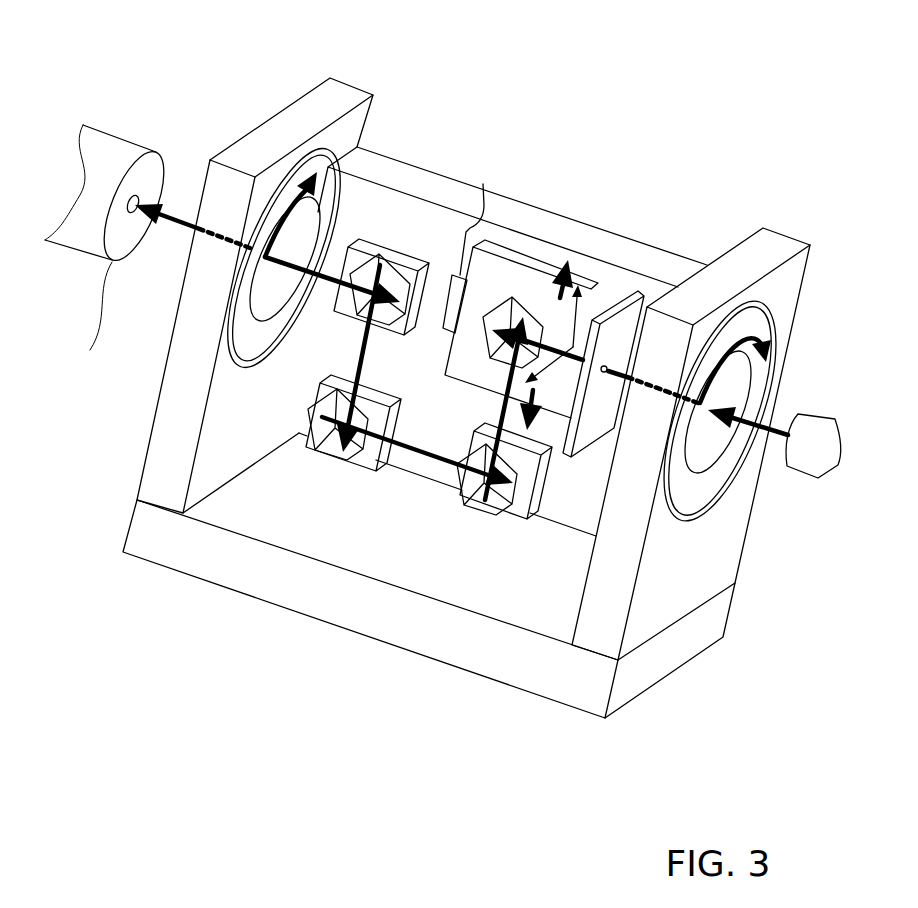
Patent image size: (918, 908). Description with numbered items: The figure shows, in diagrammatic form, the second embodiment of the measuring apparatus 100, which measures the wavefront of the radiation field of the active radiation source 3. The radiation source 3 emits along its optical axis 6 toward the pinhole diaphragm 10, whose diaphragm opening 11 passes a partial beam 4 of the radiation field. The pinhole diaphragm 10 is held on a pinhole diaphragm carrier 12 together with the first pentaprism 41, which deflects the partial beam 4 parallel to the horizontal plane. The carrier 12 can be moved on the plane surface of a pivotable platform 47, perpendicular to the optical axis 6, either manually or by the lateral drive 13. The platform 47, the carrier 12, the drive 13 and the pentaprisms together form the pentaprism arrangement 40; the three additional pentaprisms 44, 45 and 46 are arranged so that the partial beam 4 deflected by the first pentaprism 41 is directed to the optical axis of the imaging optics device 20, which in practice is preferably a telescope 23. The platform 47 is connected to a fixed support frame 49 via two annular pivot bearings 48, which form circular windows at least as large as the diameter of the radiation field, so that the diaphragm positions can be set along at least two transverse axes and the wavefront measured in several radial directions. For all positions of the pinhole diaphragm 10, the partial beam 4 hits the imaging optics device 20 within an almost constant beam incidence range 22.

The measuring apparatus 100 is at (648, 90).
The radiation source 3 is at (830, 438).
The partial beam 4 is at (176, 238).
The optical axis of the radiation source 6 is at (750, 412).
The pinhole diaphragm 10 is at (645, 296).
The diaphragm opening 11 is at (610, 362).
The pinhole diaphragm carrier 12 is at (508, 257).
The lateral drive 13 is at (469, 246).
The imaging optics device 20 is at (118, 133).
The beam incidence range 22 is at (148, 190).
The telescope 23 is at (90, 350).
The pentaprism arrangement 40 is at (401, 383).
The first pentaprism 41 is at (520, 293).
The additional pentaprism 44 is at (495, 515).
The additional pentaprism 45 is at (313, 447).
The additional pentaprism 46 is at (403, 277).
The pivotable platform 47 is at (380, 168).
The annular pivot bearings 48 is at (320, 150).
The support frame 49 is at (200, 553).